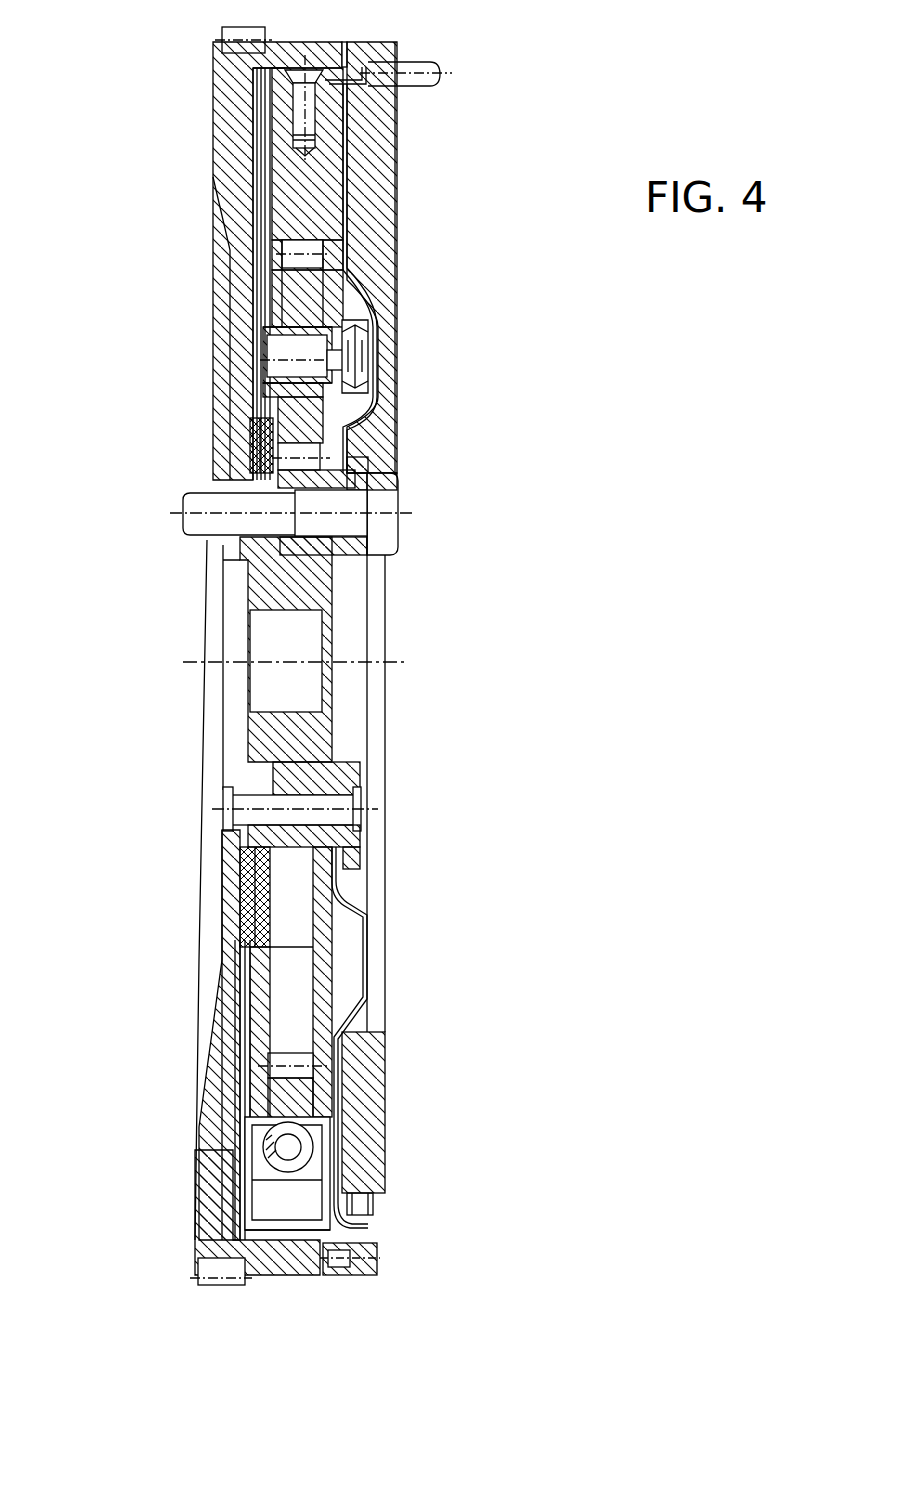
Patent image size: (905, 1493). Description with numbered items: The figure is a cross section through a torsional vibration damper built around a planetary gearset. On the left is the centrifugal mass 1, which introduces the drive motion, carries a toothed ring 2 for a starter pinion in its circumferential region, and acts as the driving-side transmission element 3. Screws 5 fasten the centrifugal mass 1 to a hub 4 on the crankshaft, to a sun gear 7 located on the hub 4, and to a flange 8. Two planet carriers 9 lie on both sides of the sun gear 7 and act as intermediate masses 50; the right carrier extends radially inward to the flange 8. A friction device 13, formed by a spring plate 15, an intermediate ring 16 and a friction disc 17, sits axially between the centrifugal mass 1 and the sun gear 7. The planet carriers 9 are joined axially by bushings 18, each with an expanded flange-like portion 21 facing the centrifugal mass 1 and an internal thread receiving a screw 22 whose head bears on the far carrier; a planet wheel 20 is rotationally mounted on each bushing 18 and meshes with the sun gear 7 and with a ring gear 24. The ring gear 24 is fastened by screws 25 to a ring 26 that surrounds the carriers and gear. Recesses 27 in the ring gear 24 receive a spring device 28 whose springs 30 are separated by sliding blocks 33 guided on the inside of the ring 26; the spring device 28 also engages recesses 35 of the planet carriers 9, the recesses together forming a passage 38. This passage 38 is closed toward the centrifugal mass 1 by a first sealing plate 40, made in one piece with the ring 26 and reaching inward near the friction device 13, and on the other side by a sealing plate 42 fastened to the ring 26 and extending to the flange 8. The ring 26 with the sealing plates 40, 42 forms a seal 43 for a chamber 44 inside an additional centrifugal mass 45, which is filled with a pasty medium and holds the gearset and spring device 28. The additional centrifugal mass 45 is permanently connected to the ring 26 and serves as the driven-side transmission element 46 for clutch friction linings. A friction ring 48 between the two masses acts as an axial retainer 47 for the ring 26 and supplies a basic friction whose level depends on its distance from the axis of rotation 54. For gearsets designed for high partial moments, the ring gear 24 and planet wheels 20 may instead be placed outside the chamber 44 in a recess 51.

The centrifugal mass 1 is at (232, 140).
The toothed ring 2 is at (222, 43).
The driving-side transmission element 3 is at (222, 222).
The hub 4 is at (240, 570).
The screws 5 is at (385, 525).
The sun gear 7 is at (400, 483).
The flange 8 is at (368, 462).
The planet carriers 9 is at (272, 218).
The friction device 13 is at (262, 375).
The spring plate 15 is at (237, 480).
The intermediate ring 16 is at (248, 432).
The friction disc 17 is at (260, 410).
The bushings 18 is at (262, 305).
The planet wheel 20 is at (307, 282).
The flange-like portion 21 is at (265, 340).
The screw 22 is at (365, 355).
The ring gear 24 is at (313, 197).
The screws 25 is at (398, 98).
The ring 26 is at (337, 65).
The recesses 27 is at (240, 1125).
The spring device 28 is at (232, 1212).
The springs 30 is at (262, 1178).
The sliding blocks 33 is at (302, 1198).
The recesses 35 is at (248, 1098).
The passage 38 is at (287, 1232).
The first sealing plate 40 is at (240, 1028).
The sealing plate 42 is at (366, 960).
The seal 43 is at (380, 900).
The chamber 44 is at (383, 1040).
The additional centrifugal mass 45 is at (368, 1077).
The driven-side transmission element 46 is at (388, 1112).
The axial retainer 47 is at (255, 80).
The friction ring 48 is at (258, 110).
The intermediate masses 50 is at (400, 130).
The recess 51 is at (332, 436).
The axis of rotation 54 is at (205, 662).